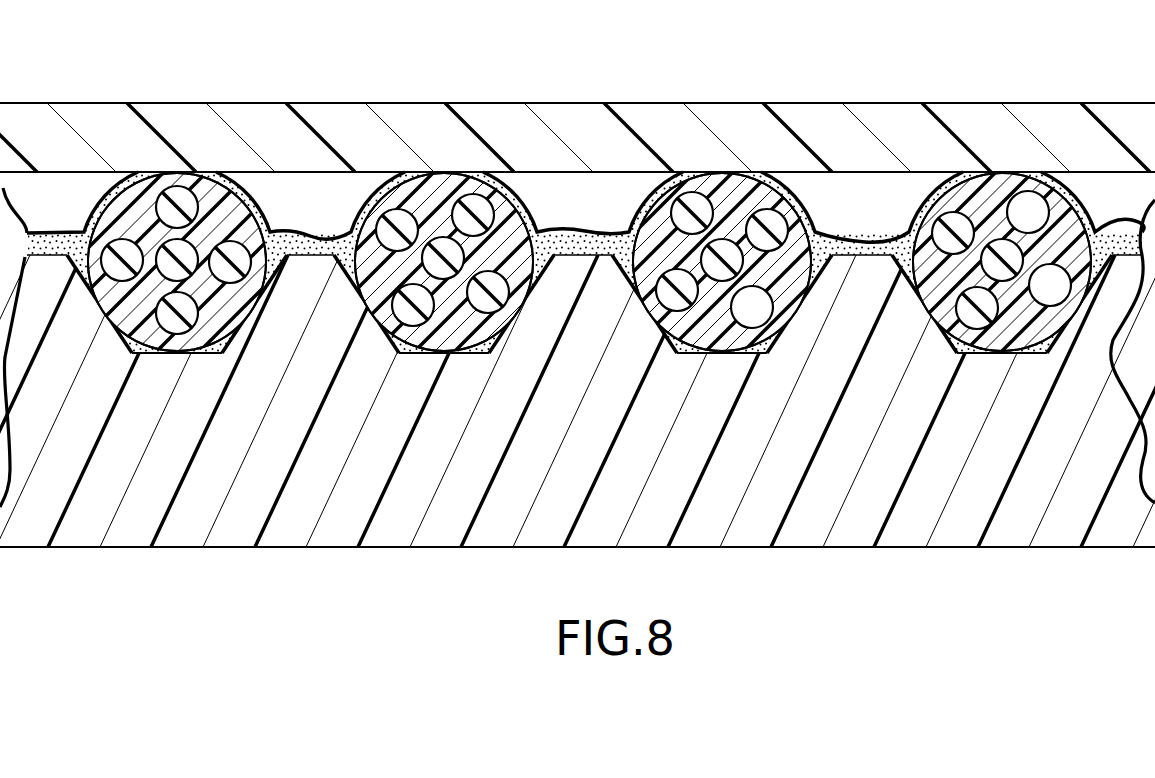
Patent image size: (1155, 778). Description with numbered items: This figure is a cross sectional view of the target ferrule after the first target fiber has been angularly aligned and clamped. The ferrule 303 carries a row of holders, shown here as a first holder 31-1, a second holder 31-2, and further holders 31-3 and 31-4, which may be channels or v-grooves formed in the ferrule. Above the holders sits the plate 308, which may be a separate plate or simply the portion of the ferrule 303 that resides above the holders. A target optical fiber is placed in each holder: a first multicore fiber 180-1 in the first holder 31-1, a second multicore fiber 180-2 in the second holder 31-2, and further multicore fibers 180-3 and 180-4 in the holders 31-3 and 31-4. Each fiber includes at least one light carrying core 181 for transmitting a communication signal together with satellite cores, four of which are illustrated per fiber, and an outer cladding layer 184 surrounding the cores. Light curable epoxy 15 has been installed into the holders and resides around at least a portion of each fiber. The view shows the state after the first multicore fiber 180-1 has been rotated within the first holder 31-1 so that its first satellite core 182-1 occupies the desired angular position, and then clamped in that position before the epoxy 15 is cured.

The light curable epoxy 15 is at (560, 232).
The plate 308 is at (740, 128).
The ferrule 303 is at (742, 525).
The first holder 31-1 is at (211, 228).
The second holder 31-2 is at (444, 235).
The third holder 31-3 is at (719, 239).
The fourth holder 31-4 is at (974, 239).
The first multicore fiber 180-1 is at (255, 194).
The second multicore fiber 180-2 is at (507, 200).
The third multicore fiber 180-3 is at (793, 207).
The fourth multicore fiber 180-4 is at (1060, 198).
The light carrying core 181 is at (185, 253).
The first satellite core 182-1 is at (192, 200).
The cladding layer 184 is at (110, 303).